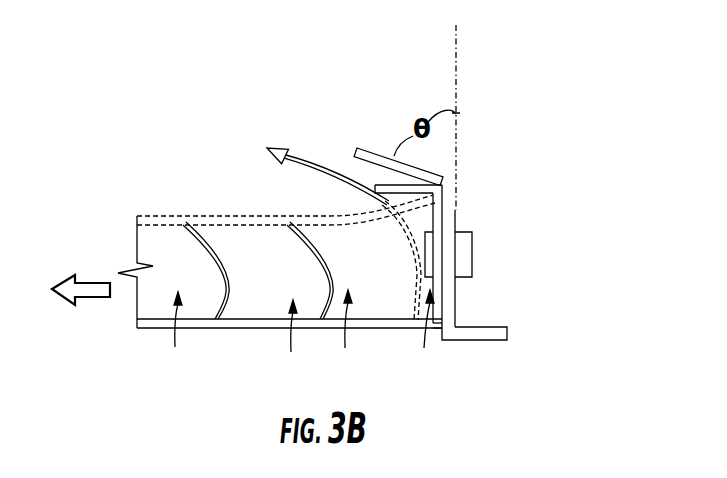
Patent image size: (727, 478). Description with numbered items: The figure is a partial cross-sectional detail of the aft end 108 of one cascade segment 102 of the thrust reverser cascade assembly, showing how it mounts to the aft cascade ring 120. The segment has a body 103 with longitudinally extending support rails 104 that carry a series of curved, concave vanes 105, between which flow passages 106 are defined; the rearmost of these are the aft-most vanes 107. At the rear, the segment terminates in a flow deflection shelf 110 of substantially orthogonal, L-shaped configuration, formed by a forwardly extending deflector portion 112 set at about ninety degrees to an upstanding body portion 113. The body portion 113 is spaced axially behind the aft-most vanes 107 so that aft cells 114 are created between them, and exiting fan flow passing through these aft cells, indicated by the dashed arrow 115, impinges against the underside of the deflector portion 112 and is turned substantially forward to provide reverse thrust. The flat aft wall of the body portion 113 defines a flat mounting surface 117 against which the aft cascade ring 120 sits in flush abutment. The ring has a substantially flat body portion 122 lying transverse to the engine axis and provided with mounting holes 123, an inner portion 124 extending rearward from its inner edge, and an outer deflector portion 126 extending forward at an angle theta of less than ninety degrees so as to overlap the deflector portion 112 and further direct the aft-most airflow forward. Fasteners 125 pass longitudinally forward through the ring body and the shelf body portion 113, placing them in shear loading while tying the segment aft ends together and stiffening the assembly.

The cascade segment 102 is at (130, 307).
The body 103 is at (288, 344).
The support rails 104 is at (175, 335).
The vanes 105 is at (199, 235).
The flow passages 106 is at (250, 292).
The aft-most vanes 107 is at (300, 236).
The aft end 108 is at (438, 344).
The flow deflection shelf 110 is at (424, 334).
The deflector portion 112 is at (377, 183).
The body portion 113 is at (440, 325).
The aft cells 114 is at (344, 334).
The dashed arrow 115 is at (420, 295).
The mounting surface 117 is at (443, 225).
The aft cascade ring 120 is at (500, 208).
The body portion 122 is at (443, 202).
The mounting holes 123 is at (457, 232).
The inner portion 124 is at (442, 293).
The fasteners 125 is at (465, 262).
The deflector portion 126 is at (418, 163).